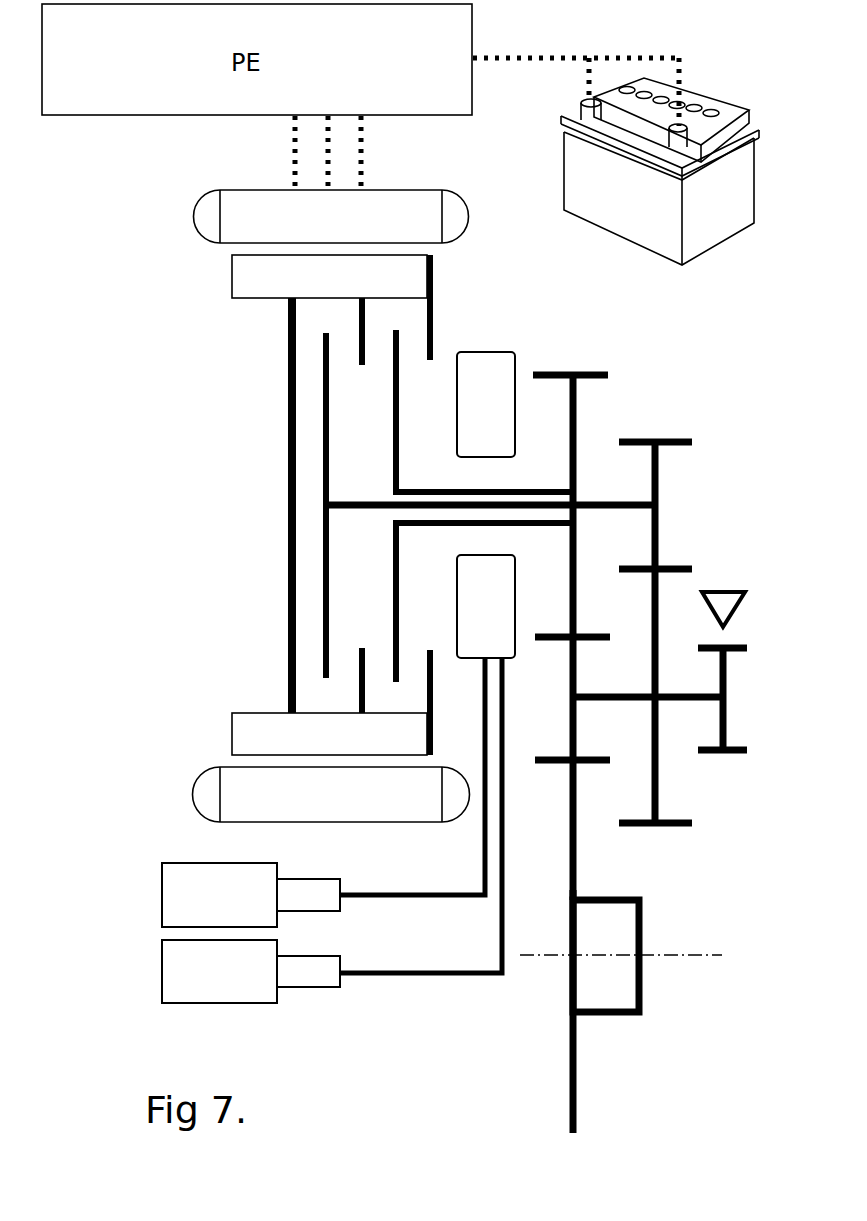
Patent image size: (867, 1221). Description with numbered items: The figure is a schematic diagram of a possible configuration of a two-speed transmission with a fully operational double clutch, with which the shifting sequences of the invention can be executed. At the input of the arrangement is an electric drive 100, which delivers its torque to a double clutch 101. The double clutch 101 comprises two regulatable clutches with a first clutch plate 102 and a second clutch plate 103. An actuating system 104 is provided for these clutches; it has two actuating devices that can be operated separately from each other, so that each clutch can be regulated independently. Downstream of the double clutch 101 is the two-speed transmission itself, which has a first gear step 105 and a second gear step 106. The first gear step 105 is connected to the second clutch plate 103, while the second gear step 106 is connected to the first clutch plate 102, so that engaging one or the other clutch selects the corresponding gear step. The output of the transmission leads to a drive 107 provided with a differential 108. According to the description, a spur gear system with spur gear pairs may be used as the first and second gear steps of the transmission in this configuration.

The electric drive 100 is at (170, 744).
The double clutch 101 is at (262, 535).
The first clutch plate 102 is at (323, 463).
The second clutch plate 103 is at (395, 416).
The actuating system 104 is at (476, 372).
The first gear step 105 is at (578, 428).
The second gear step 106 is at (660, 486).
The drive 107 is at (567, 1068).
The differential 108 is at (622, 929).